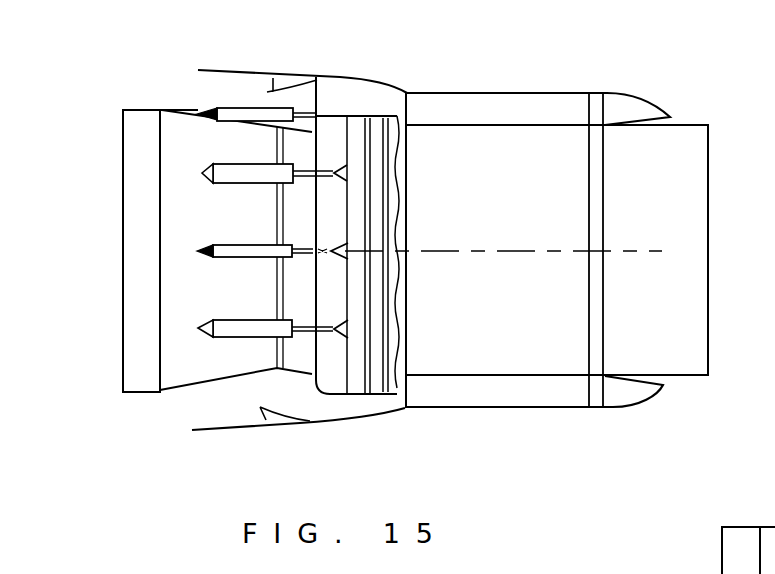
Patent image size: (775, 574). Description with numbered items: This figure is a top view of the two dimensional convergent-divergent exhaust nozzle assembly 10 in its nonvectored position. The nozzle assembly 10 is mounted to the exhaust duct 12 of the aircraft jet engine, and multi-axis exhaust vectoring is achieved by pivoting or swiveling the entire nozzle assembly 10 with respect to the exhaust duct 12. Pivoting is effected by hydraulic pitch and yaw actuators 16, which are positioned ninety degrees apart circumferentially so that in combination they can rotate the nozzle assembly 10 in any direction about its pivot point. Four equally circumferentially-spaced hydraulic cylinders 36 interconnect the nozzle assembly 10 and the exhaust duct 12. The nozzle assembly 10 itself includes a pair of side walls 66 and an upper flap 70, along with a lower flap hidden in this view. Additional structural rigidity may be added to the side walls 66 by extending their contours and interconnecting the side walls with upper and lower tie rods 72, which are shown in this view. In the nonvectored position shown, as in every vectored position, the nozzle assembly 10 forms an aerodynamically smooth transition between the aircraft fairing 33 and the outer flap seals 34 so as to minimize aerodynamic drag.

The exhaust nozzle assembly 10 is at (596, 74).
The exhaust duct 12 is at (142, 118).
The hydraulic pitch and yaw actuator 16 is at (243, 110).
The aircraft fairing 33 is at (235, 70).
The outer flap seal 34 is at (382, 83).
The hydraulic cylinder 36 is at (250, 177).
The side wall 66 is at (492, 103).
The upper flap 70 is at (688, 290).
The tie rod 72 is at (600, 163).